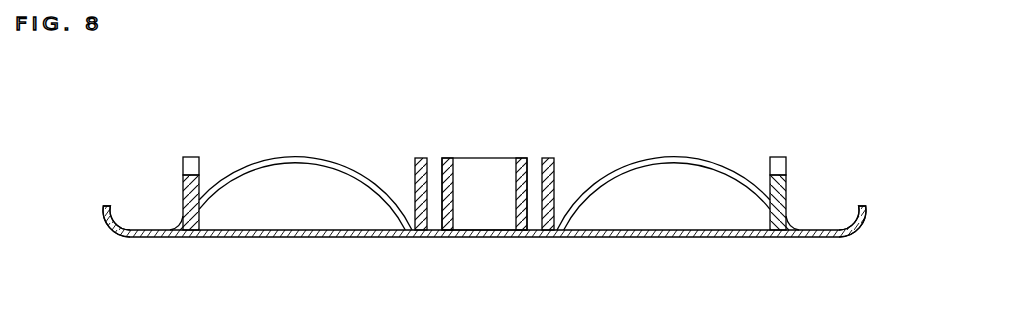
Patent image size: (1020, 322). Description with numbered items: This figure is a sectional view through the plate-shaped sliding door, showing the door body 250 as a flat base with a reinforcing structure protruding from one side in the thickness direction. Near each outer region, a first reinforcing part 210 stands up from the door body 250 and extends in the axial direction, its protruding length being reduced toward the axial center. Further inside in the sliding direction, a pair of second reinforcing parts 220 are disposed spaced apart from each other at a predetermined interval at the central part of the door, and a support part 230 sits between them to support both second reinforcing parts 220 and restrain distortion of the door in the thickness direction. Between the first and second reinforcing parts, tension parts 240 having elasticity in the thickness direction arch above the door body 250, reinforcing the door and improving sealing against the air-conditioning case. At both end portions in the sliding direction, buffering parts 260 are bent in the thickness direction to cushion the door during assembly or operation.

The first reinforcing part 210 is at (190, 156).
The second reinforcing part 220 is at (420, 157).
The support part 230 is at (485, 157).
The tension part 240 is at (282, 156).
The door body 250 is at (808, 238).
The buffering part 260 is at (103, 212).